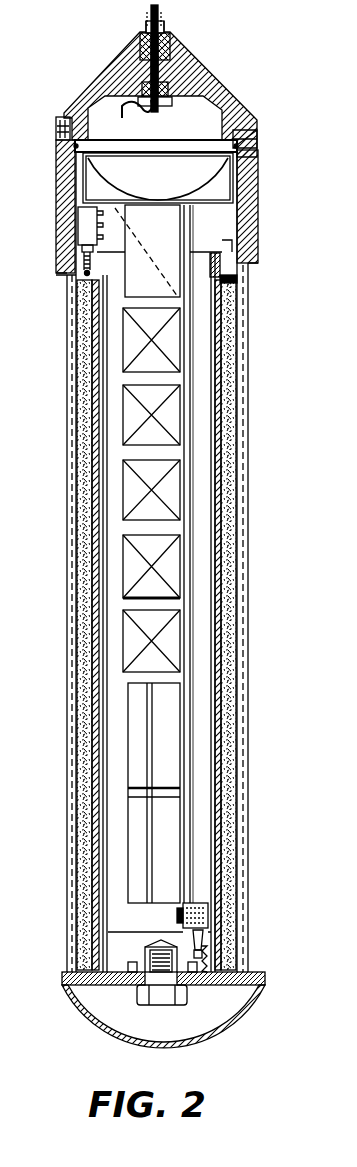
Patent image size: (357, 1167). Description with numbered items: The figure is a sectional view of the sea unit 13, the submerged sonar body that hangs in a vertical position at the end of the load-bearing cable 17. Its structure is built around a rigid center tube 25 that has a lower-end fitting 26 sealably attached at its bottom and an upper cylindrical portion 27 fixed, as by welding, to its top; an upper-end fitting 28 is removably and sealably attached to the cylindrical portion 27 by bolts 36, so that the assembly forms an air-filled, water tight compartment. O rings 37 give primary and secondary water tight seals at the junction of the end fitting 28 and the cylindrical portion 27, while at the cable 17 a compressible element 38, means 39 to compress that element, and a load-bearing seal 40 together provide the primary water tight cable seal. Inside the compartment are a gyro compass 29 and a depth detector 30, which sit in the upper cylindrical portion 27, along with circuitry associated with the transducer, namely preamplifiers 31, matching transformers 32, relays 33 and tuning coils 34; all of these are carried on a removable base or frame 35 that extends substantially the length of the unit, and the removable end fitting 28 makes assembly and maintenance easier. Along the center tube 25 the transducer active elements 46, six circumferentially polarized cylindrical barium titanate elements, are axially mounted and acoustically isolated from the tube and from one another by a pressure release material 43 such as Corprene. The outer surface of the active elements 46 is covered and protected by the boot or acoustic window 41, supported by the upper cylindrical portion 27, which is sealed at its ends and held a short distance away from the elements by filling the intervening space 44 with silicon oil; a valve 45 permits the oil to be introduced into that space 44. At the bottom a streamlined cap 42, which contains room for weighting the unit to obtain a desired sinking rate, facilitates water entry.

The sea unit 13 is at (286, 300).
The load-bearing cable 17 is at (159, 16).
The center tube 25 is at (204, 508).
The lower-end fitting 26 is at (226, 983).
The upper cylindrical portion 27 is at (62, 180).
The upper-end fitting 28 is at (213, 86).
The gyro compass 29 is at (169, 190).
The depth detector 30 is at (93, 199).
The preamplifiers 31 is at (170, 236).
The matching transformers 32 is at (163, 332).
The relays 33 is at (132, 627).
The tuning coils 34 is at (133, 813).
The removable base or frame 35 is at (191, 576).
The bolts 36 is at (60, 118).
The O rings 37 is at (257, 136).
The compressible element 38 is at (190, 43).
The means to compress 39 is at (150, 25).
The load-bearing seal 40 is at (147, 80).
The transducer boot or acoustic window 41 is at (244, 335).
The streamlined cap 42 is at (258, 998).
The pressure release material 43 is at (236, 636).
The space 44 is at (236, 478).
The valve 45 is at (224, 248).
The active elements 46 is at (232, 361).